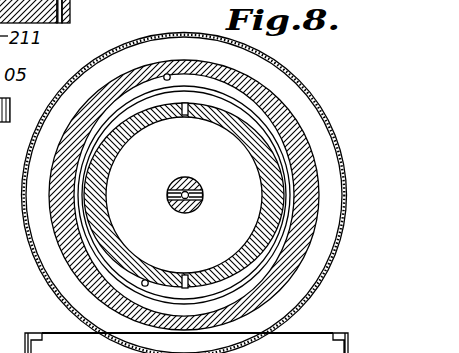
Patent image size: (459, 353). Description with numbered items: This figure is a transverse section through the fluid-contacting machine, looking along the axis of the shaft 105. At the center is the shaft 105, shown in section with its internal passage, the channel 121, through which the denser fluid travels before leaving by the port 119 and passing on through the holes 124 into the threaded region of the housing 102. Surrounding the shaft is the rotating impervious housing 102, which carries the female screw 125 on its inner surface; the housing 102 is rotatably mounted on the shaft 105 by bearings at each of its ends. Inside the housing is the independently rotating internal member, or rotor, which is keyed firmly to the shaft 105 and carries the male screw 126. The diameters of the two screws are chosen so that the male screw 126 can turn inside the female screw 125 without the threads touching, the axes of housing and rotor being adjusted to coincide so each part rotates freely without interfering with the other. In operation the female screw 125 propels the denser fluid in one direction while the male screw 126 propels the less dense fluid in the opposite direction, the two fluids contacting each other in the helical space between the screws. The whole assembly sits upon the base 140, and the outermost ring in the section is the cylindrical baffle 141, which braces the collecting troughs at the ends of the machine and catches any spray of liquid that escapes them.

The housing 102 is at (292, 280).
The shaft 105 is at (187, 182).
The port 119 is at (203, 195).
The channel 121 is at (168, 195).
The holes 124 is at (184, 116).
The female screw 125 is at (167, 74).
The male screw 126 is at (148, 280).
The base 140 is at (52, 310).
The cylindrical baffle 141 is at (298, 81).